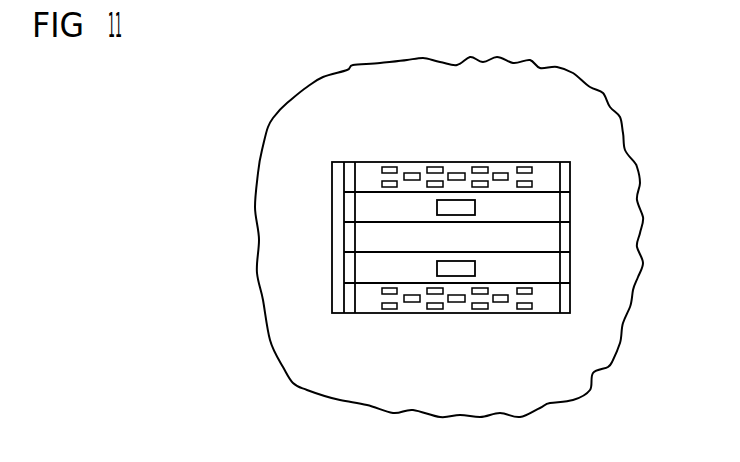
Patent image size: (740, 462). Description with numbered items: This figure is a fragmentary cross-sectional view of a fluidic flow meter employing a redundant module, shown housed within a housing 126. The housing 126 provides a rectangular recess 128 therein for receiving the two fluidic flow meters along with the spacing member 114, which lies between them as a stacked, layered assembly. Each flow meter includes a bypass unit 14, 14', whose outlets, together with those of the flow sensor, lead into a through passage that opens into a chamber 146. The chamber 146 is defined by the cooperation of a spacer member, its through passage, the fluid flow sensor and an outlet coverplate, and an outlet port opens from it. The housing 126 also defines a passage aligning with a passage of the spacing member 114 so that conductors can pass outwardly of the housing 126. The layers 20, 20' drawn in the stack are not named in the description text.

The bypass unit 14 is at (523, 325).
The bypass unit 14' is at (512, 180).
The first electrode layer 20 is at (512, 294).
The second electrode layer 20' is at (518, 216).
The spacing member 114 is at (550, 237).
The housing 126 is at (615, 278).
The rectangular recess 128 is at (368, 312).
The chamber 146 is at (461, 246).